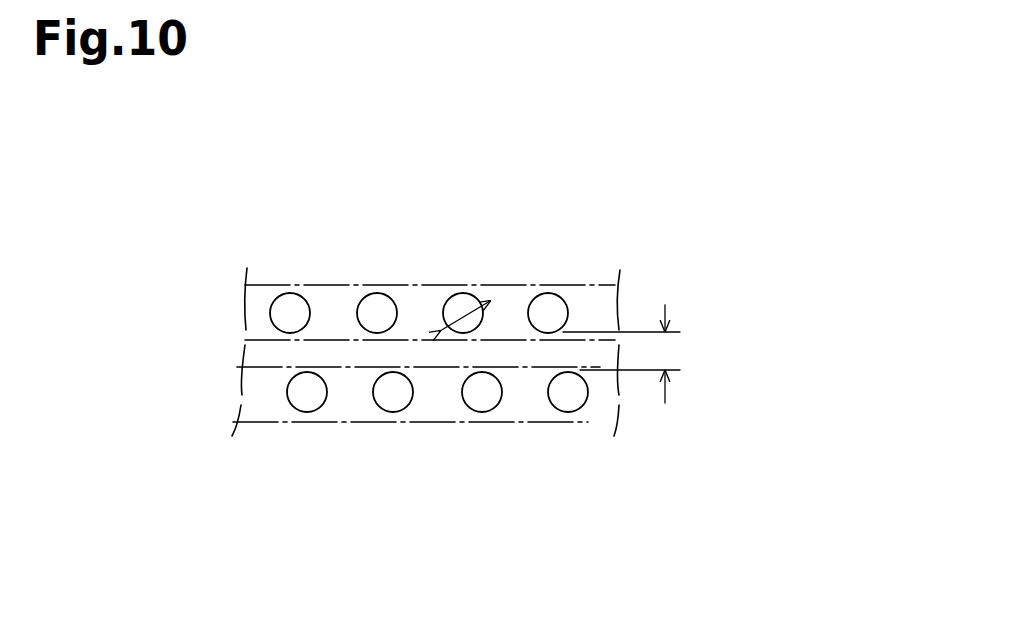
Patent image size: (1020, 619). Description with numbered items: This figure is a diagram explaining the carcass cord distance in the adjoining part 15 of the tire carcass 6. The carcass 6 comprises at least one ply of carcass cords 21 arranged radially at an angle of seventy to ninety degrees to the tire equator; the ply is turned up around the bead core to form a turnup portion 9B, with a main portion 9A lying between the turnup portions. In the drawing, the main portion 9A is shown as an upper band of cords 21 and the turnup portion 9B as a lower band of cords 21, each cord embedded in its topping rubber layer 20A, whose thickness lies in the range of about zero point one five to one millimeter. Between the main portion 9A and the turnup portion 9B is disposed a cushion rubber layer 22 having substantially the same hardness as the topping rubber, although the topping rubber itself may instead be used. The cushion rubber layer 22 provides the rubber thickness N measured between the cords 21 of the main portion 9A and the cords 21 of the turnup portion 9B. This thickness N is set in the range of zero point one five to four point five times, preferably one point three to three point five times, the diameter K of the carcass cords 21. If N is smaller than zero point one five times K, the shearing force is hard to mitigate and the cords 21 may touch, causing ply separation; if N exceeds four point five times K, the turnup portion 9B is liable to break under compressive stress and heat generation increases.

The adjoining part 15 is at (698, 243).
The carcass 6 is at (520, 263).
The main portion 9A is at (583, 285).
The turnup portion 9B is at (592, 422).
The topping rubber layer 20A is at (343, 296).
The carcass cords 21 is at (290, 303).
The cushion rubber layer 22 is at (263, 347).
The diameter of the carcass cords K is at (465, 305).
The rubber thickness N is at (667, 350).